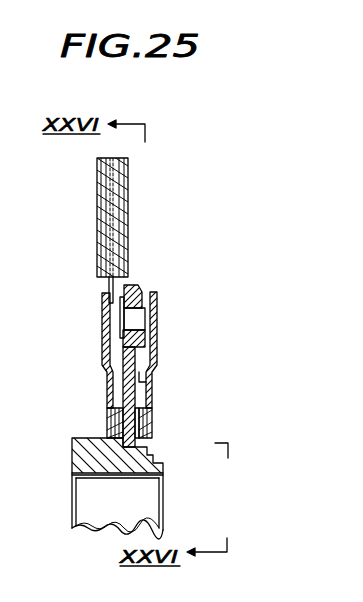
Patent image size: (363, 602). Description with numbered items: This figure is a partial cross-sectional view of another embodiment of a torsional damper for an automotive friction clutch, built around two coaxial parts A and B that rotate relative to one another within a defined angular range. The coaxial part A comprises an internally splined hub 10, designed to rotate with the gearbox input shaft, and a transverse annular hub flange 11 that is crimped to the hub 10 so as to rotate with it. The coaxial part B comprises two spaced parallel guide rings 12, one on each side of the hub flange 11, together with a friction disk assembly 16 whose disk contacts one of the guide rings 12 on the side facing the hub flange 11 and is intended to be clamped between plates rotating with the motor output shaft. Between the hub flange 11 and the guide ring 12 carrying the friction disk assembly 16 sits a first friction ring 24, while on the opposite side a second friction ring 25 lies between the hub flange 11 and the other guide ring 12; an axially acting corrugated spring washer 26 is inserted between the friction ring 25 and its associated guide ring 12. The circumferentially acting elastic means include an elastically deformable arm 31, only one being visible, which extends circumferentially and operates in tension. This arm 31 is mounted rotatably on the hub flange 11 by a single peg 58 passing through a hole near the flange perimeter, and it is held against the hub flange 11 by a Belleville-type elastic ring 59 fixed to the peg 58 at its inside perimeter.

The hub 10 is at (66, 472).
The hub flange 11 is at (131, 280).
The guide rings 12 is at (103, 300).
The friction disk assembly 16 is at (90, 192).
The first friction ring 24 is at (109, 422).
The second friction ring 25 is at (146, 412).
The corrugated spring washer 26 is at (150, 424).
The elastically deformable arm 31 is at (143, 287).
The peg 58 is at (140, 316).
The elastic ring 59 is at (147, 338).
The coaxial part A is at (63, 445).
The coaxial part B is at (156, 186).